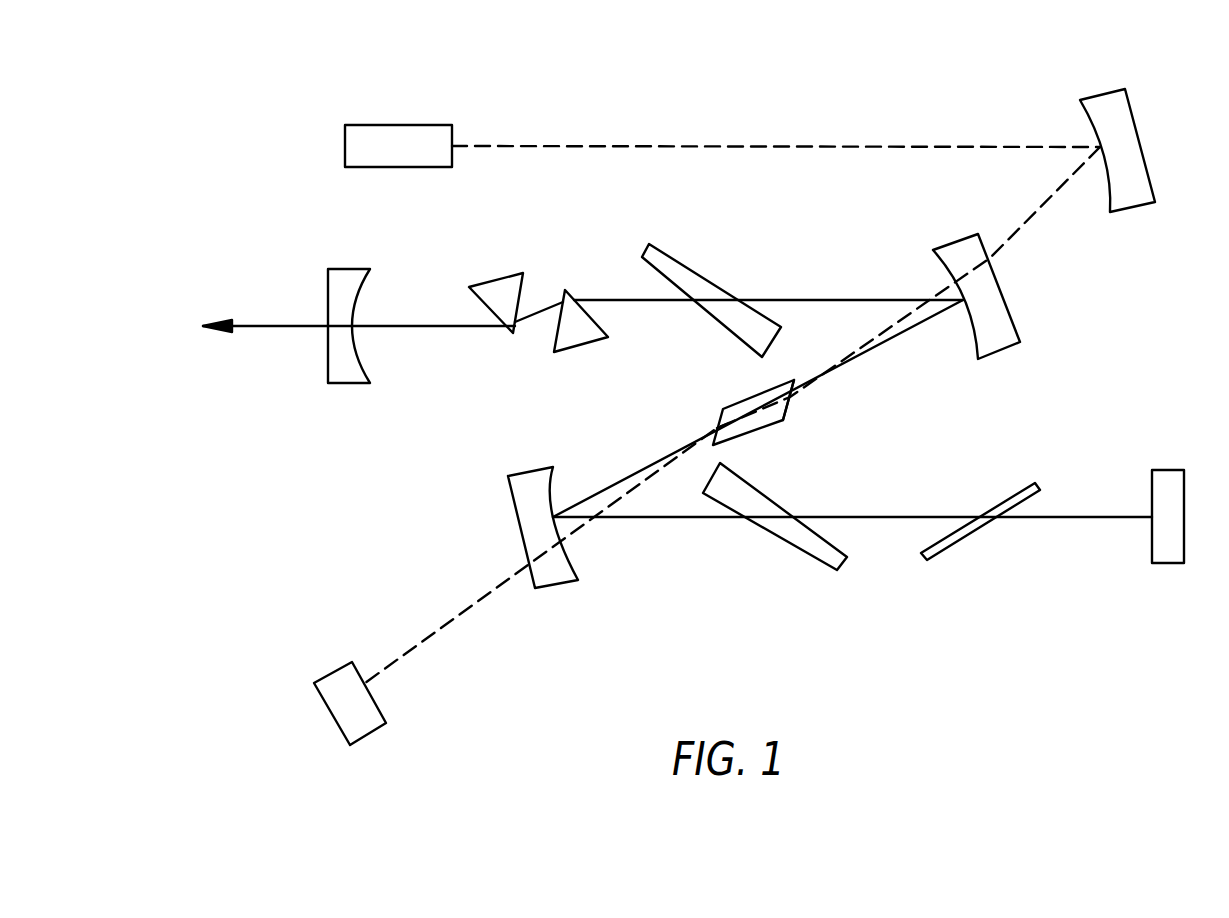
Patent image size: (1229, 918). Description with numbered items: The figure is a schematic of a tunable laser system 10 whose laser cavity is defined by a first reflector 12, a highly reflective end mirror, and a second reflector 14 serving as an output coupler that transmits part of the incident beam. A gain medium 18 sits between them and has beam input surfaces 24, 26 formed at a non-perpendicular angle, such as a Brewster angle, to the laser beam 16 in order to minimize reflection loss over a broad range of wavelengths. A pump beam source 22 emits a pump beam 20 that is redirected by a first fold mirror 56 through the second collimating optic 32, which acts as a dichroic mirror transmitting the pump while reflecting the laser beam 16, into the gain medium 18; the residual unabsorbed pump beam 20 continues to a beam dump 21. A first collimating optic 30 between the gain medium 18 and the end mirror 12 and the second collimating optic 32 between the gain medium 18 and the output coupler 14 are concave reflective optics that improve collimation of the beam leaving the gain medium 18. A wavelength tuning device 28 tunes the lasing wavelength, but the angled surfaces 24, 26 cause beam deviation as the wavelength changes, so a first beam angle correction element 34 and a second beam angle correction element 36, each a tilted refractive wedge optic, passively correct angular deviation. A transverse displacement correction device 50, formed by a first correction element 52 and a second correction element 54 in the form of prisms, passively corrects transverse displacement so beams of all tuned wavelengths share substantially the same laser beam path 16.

The tunable laser system 10 is at (623, 62).
The first reflector 12 is at (1167, 563).
The second reflector 14 is at (340, 383).
The laser beam 16 is at (1111, 518).
The gain medium 18 is at (752, 430).
The pump beam 20 is at (861, 146).
The beam dump 21 is at (367, 738).
The pump beam source 22 is at (385, 125).
The beam input surface 24 is at (785, 408).
The beam input surface 26 is at (718, 420).
The wavelength tuning device 28 is at (947, 546).
The first collimating optic 30 is at (548, 588).
The second collimating optic 32 is at (1010, 295).
The first beam angle correction element 34 is at (817, 563).
The second beam angle correction element 36 is at (678, 259).
The transverse displacement correction device 50 is at (558, 244).
The first correction element 52 is at (574, 347).
The second correction element 54 is at (491, 281).
The first fold mirror 56 is at (1133, 110).